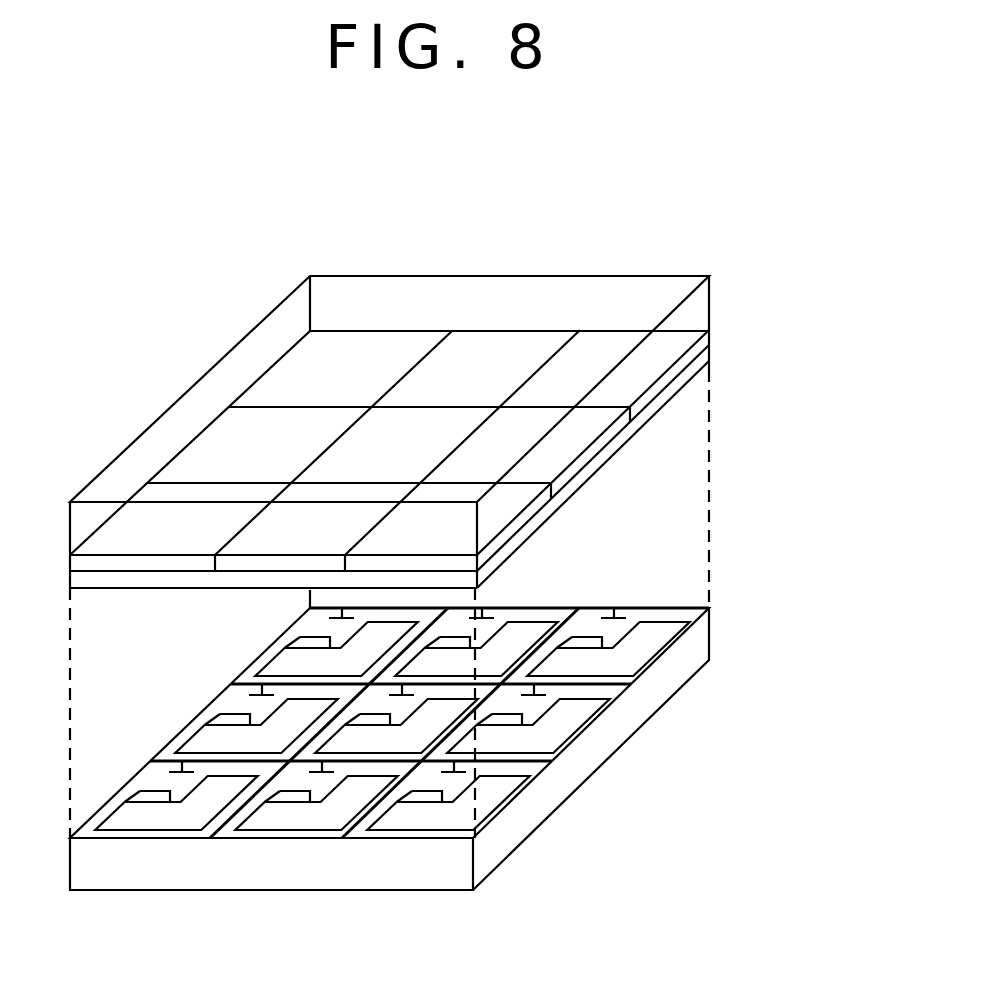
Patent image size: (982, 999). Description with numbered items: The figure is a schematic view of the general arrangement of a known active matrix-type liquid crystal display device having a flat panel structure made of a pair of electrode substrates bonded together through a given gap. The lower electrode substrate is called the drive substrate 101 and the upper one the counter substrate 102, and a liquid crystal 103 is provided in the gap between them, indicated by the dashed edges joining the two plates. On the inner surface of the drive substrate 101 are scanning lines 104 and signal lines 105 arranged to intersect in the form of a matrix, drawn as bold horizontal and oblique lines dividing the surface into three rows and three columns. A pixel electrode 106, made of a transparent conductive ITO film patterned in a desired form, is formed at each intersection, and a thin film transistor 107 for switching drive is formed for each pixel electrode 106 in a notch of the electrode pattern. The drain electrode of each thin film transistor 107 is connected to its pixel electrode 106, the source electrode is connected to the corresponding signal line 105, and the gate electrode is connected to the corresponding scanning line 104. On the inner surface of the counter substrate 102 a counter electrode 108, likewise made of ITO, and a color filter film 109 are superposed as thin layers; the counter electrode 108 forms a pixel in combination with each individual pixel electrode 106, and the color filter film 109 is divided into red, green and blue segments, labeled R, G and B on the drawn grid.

The drive substrate 101 is at (549, 870).
The counter substrate 102 is at (549, 262).
The liquid crystal 103 is at (684, 524).
The scanning line 104 is at (587, 686).
The signal line 105 is at (532, 660).
The pixel electrode 106 is at (503, 782).
The thin film transistor 107 is at (427, 788).
The counter electrode 108 is at (690, 376).
The color filter film 109 is at (712, 331).